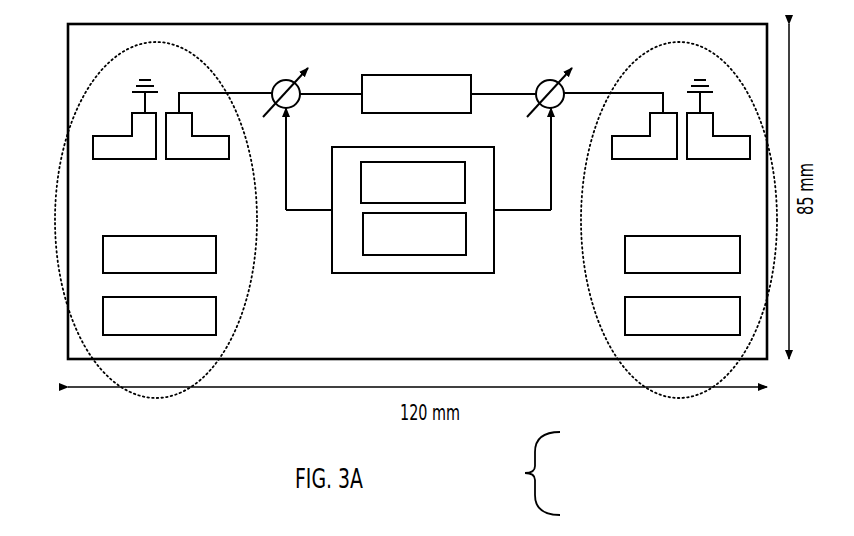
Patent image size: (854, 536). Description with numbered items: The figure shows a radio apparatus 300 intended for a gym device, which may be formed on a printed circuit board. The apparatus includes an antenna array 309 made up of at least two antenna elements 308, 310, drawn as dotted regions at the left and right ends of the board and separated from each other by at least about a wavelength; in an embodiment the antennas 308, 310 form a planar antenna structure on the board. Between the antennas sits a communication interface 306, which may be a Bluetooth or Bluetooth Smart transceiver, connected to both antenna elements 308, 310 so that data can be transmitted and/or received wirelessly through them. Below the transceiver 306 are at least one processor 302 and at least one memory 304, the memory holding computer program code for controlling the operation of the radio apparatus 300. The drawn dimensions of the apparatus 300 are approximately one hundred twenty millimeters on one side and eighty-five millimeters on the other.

The radio apparatus 300 is at (350, 332).
The processor 302 is at (413, 182).
The memory 304 is at (414, 234).
The communication interface 306 is at (416, 94).
The antenna element 308 is at (155, 399).
The antenna array 309 is at (525, 473).
The antenna element 310 is at (680, 401).